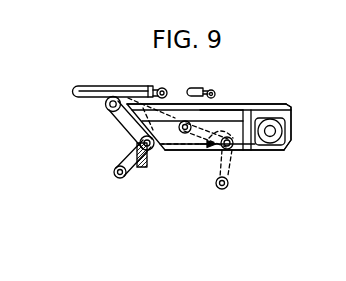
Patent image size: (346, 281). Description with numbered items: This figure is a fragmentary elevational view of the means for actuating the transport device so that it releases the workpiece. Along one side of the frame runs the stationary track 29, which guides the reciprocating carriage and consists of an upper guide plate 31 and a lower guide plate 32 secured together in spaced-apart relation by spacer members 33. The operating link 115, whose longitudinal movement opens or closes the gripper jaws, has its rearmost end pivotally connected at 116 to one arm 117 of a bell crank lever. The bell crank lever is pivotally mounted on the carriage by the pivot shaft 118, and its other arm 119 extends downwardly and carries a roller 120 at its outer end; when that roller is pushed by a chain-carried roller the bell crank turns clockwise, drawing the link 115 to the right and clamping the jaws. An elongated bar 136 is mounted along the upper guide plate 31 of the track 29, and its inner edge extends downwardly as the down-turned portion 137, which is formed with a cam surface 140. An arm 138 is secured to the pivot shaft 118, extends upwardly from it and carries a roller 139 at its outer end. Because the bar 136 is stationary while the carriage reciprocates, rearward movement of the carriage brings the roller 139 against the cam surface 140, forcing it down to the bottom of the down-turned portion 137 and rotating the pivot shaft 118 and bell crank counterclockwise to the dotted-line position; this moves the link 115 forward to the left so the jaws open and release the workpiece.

The track 29 is at (273, 158).
The upper guide plate 31 is at (291, 111).
The lower guide plate 32 is at (252, 147).
The spacer member 33 is at (249, 124).
The operating link 115 is at (114, 86).
The pivotal connection 116 is at (166, 90).
The arm of bell crank lever 117 is at (129, 137).
The pivot shaft 118 is at (152, 153).
The other arm of bell crank lever 119 is at (130, 173).
The roller 120 is at (118, 180).
The elongated bar 136 is at (251, 108).
The down-turned portion 137 is at (231, 113).
The arm 138 is at (120, 119).
The roller 139 is at (107, 114).
The cam surface 140 is at (168, 110).